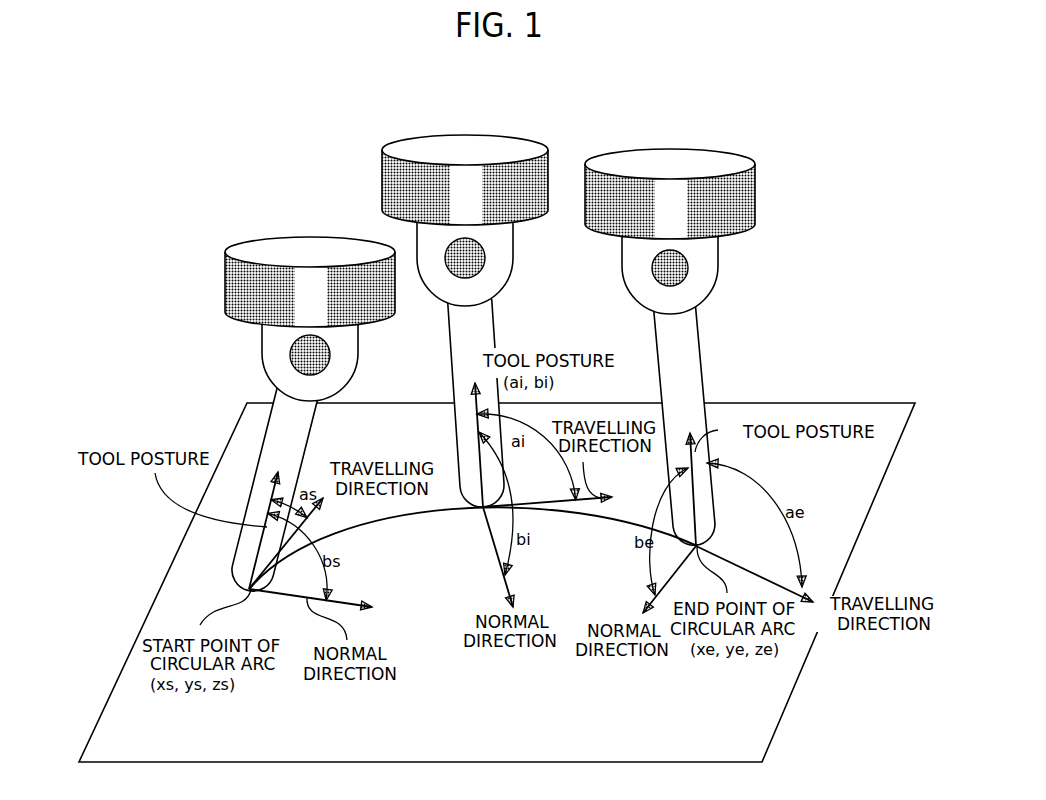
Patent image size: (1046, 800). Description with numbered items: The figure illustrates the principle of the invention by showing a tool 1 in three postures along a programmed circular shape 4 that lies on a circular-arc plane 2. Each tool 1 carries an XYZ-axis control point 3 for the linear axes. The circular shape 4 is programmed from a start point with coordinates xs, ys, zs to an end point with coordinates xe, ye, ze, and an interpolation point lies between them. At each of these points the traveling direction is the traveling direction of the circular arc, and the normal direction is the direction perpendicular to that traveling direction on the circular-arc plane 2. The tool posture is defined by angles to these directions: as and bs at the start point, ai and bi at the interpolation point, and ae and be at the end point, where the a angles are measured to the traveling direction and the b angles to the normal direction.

The tool 1 is at (695, 347).
The circular-arc plane 2 is at (788, 705).
The XYZ-axis control point 3 is at (685, 273).
The programmed circular shape 4 is at (423, 527).